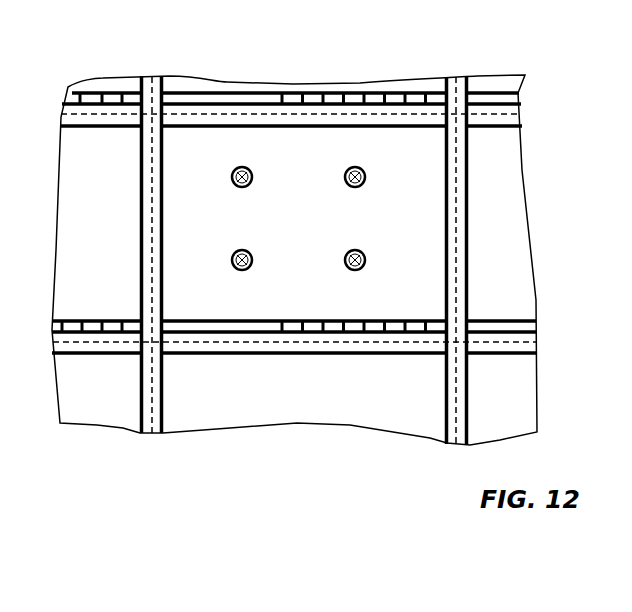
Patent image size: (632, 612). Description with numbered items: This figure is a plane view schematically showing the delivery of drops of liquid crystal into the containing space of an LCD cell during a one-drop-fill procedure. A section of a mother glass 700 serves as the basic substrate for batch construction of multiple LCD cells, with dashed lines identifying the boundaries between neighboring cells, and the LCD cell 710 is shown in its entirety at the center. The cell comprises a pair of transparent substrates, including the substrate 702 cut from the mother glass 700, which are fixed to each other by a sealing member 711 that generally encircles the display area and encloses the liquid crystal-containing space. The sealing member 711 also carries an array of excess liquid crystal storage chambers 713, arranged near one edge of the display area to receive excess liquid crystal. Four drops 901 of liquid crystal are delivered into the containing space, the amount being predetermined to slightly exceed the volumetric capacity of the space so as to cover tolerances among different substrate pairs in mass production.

The mother glass 700 is at (70, 424).
The substrate 702 is at (293, 270).
The LCD cell 710 is at (217, 305).
The sealing member 711 is at (445, 238).
The excess liquid crystal storage chambers 713 is at (335, 335).
The drop of liquid crystal 901 is at (350, 253).